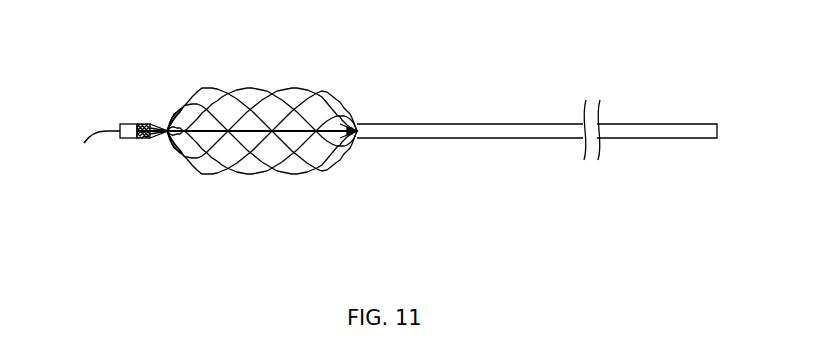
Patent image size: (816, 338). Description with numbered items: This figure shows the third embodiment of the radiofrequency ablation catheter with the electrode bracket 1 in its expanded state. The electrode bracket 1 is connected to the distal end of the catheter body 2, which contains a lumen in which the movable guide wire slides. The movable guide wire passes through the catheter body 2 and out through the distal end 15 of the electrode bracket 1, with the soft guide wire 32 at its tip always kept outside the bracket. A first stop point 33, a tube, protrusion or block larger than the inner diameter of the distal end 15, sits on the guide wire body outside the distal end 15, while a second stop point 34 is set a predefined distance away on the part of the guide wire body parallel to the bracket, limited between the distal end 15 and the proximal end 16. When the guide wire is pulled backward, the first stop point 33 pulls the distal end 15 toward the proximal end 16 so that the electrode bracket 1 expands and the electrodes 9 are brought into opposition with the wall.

The electrode bracket 1 is at (280, 117).
The catheter body 2 is at (482, 123).
The electrodes 9 is at (265, 90).
The distal end of the electrode bracket 15 is at (134, 123).
The proximal end of the electrode bracket 16 is at (365, 133).
The soft guide wire 32 is at (103, 130).
The first stop point 33 is at (121, 139).
The second stop point 34 is at (163, 147).